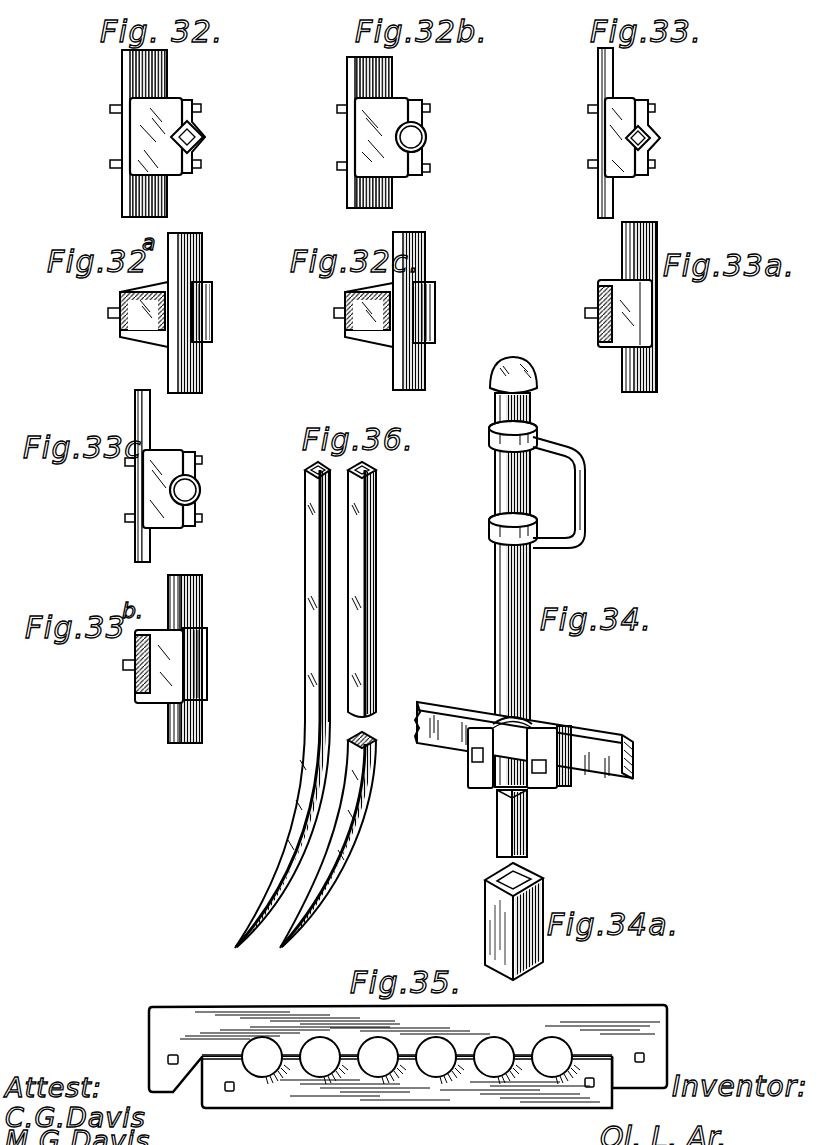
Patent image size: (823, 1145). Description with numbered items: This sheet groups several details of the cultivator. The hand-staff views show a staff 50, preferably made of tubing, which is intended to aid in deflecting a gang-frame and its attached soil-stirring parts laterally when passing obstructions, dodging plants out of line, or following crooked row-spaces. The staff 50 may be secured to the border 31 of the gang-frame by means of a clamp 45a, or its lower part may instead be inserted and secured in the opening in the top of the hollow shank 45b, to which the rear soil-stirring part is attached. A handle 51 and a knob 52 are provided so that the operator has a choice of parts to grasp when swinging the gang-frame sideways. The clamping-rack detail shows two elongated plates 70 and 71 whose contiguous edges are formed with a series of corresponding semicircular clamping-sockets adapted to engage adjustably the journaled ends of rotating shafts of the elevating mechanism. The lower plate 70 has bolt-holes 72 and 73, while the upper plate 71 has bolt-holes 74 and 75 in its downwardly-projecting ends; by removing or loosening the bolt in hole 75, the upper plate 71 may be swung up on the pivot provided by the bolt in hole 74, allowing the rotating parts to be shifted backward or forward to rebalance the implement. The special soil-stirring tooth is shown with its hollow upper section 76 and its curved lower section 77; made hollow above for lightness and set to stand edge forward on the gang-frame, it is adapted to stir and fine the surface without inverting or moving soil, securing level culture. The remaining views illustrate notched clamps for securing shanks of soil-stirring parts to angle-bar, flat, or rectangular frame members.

In FIG. 34, the border of the gang-frame 31 is at (605, 735).
In FIG. 34, the clamp 45a is at (538, 778).
In FIG. 34A, the hollow shank 45b is at (533, 947).
In FIG. 34, the staff 50 is at (531, 662).
In FIG. 34, the handle 51 is at (584, 502).
In FIG. 34, the knob 52 is at (537, 382).
In FIG. 35, the lower plate of clamping-rack 70 is at (443, 1095).
In FIG. 35, the upper plate of clamping-rack 71 is at (525, 1012).
In FIG. 35, the bolt-hole 72 is at (230, 1091).
In FIG. 35, the bolt-hole 73 is at (588, 1088).
In FIG. 35, the bolt-hole 74 is at (168, 1052).
In FIG. 35, the bolt-hole 75 is at (644, 1057).
In FIG. 36, the straight bar 76 is at (308, 583).
In FIG. 36, the curved bar 77 is at (296, 845).